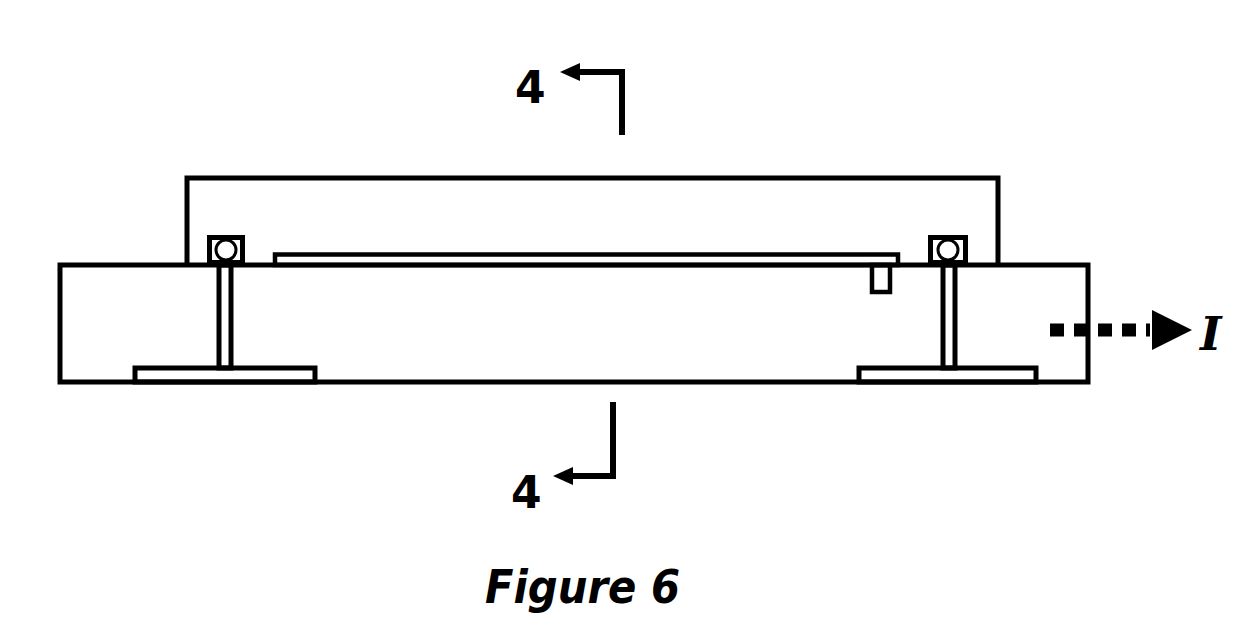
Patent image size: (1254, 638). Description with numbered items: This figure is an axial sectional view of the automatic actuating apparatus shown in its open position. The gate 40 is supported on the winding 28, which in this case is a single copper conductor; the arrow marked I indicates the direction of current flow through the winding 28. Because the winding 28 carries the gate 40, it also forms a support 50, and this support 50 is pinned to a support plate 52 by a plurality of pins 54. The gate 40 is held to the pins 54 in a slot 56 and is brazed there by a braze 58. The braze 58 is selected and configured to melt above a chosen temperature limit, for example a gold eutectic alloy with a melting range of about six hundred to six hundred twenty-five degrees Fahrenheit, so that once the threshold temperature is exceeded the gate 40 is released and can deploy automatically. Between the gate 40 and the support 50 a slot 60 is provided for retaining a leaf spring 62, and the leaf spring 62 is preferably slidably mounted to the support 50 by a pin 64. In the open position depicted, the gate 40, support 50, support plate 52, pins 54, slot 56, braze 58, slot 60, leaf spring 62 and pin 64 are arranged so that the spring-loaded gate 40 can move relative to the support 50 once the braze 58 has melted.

The winding 28 is at (568, 362).
The gate 40 is at (517, 153).
The support 50 is at (562, 288).
The support plate 52 is at (536, 307).
The pins 54 is at (496, 262).
The slot 56 is at (501, 172).
The braze 58 is at (142, 193).
The slot 60 is at (714, 151).
The leaf spring 62 is at (715, 167).
The pin 64 is at (1013, 200).